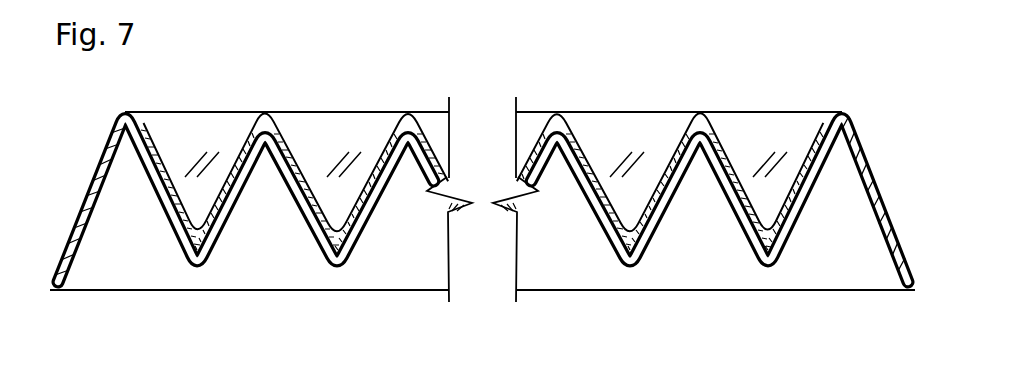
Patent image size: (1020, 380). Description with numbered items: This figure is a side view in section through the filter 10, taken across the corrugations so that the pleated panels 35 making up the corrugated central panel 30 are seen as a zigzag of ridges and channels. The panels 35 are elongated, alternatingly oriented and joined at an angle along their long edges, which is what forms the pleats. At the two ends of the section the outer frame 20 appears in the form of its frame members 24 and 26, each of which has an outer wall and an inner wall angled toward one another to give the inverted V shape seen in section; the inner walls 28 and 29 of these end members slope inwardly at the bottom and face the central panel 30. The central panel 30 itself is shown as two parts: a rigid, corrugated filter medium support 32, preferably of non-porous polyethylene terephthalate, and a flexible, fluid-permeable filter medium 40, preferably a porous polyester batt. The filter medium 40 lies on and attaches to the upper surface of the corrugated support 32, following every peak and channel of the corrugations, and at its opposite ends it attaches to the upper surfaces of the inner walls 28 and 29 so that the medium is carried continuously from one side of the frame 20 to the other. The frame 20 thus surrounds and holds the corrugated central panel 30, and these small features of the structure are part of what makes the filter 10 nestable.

The filter 10 is at (251, 183).
The outer frame 20 is at (717, 194).
The frame member 24 is at (82, 190).
The frame member 26 is at (893, 209).
The inner wall 28 is at (157, 200).
The inner wall 29 is at (807, 205).
The corrugated central panel 30 is at (556, 97).
The corrugated filter medium support 32 is at (237, 157).
The panels 35 is at (233, 208).
The filter medium 40 is at (582, 145).